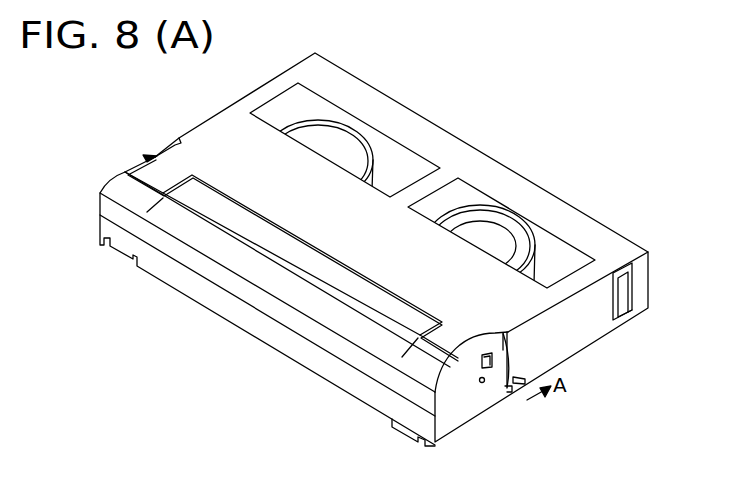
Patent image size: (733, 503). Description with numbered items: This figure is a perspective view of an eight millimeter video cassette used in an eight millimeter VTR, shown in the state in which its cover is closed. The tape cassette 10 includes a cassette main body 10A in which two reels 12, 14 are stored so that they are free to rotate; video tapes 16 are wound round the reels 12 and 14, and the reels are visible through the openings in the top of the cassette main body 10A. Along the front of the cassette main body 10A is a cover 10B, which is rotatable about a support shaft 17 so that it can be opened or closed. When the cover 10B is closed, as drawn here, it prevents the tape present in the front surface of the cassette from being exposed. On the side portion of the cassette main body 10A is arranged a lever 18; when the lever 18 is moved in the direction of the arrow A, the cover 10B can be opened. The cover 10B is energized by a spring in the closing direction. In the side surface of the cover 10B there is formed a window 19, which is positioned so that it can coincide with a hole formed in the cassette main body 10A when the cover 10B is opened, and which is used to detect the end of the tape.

The tape cassette 10 is at (492, 143).
The cassette main body 10A is at (522, 187).
The cover 10B is at (288, 343).
The reel 12 is at (343, 147).
The reel 14 is at (525, 240).
The video tape 16 is at (537, 273).
The support shaft 17 is at (482, 384).
The lever 18 is at (510, 391).
The window 19 is at (487, 370).